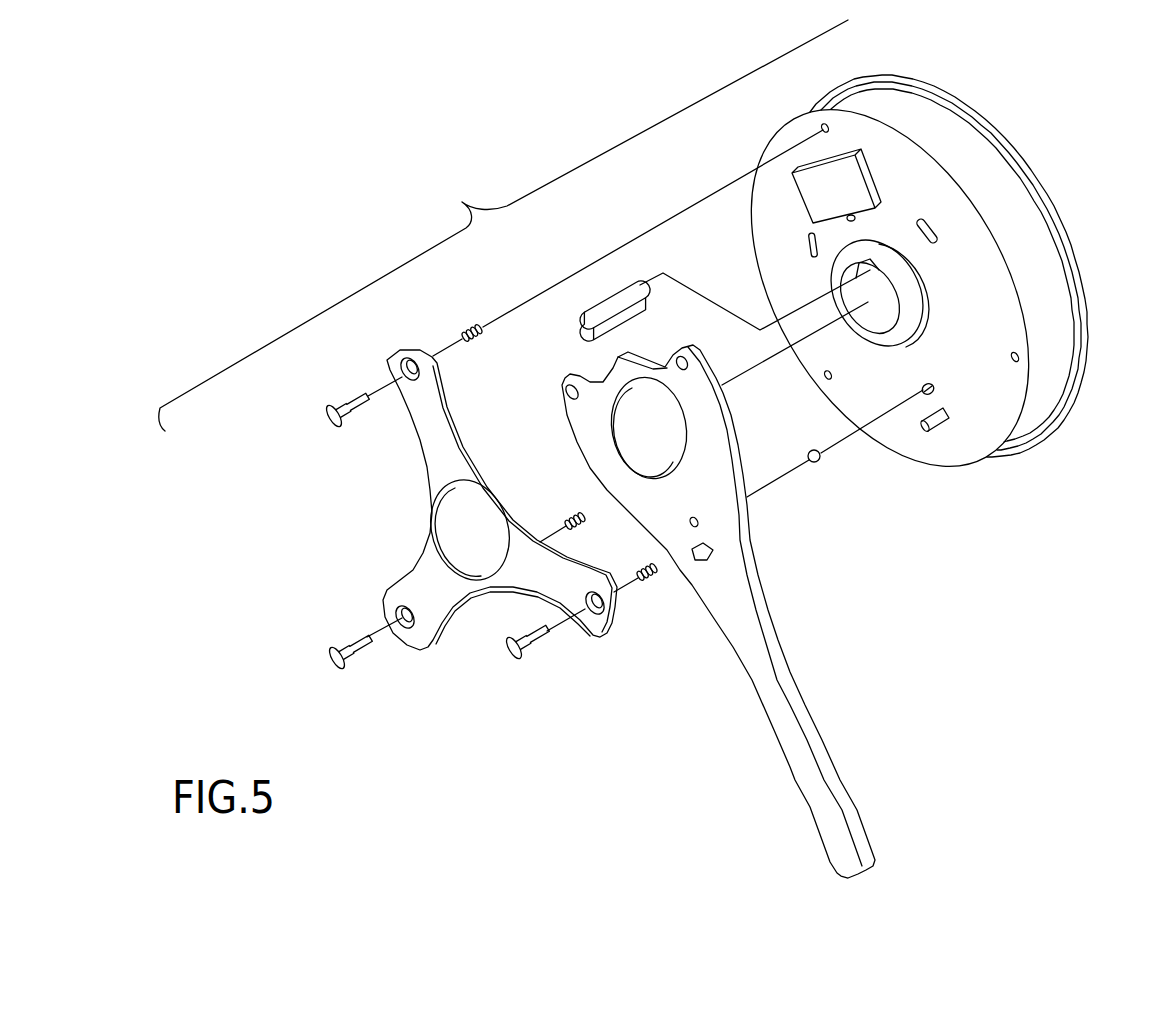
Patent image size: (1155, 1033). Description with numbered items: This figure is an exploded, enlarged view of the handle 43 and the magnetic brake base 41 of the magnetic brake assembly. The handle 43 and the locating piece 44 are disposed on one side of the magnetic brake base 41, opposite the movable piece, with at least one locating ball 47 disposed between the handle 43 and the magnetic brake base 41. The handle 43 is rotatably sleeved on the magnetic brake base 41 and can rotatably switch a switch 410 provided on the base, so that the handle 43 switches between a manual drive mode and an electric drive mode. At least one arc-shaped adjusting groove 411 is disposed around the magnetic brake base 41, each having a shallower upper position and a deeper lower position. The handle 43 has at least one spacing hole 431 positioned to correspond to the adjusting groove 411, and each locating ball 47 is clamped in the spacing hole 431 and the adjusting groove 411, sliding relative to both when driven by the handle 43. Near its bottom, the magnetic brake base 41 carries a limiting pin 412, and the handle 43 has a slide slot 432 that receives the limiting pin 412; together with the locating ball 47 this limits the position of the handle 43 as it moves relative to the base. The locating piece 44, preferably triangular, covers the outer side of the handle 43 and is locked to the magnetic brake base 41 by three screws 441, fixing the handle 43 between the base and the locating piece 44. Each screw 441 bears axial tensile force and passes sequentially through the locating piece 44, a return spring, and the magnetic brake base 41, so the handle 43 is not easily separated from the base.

The magnetic brake base 41 is at (963, 440).
The switch 410 is at (817, 200).
The adjusting groove 411 is at (933, 388).
The limiting pin 412 is at (933, 430).
The handle 43 is at (783, 718).
The spacing hole 431 is at (700, 523).
The slide slot 432 is at (697, 565).
The locating piece 44 is at (432, 447).
The screw 441 is at (352, 404).
The locating ball 47 is at (819, 462).